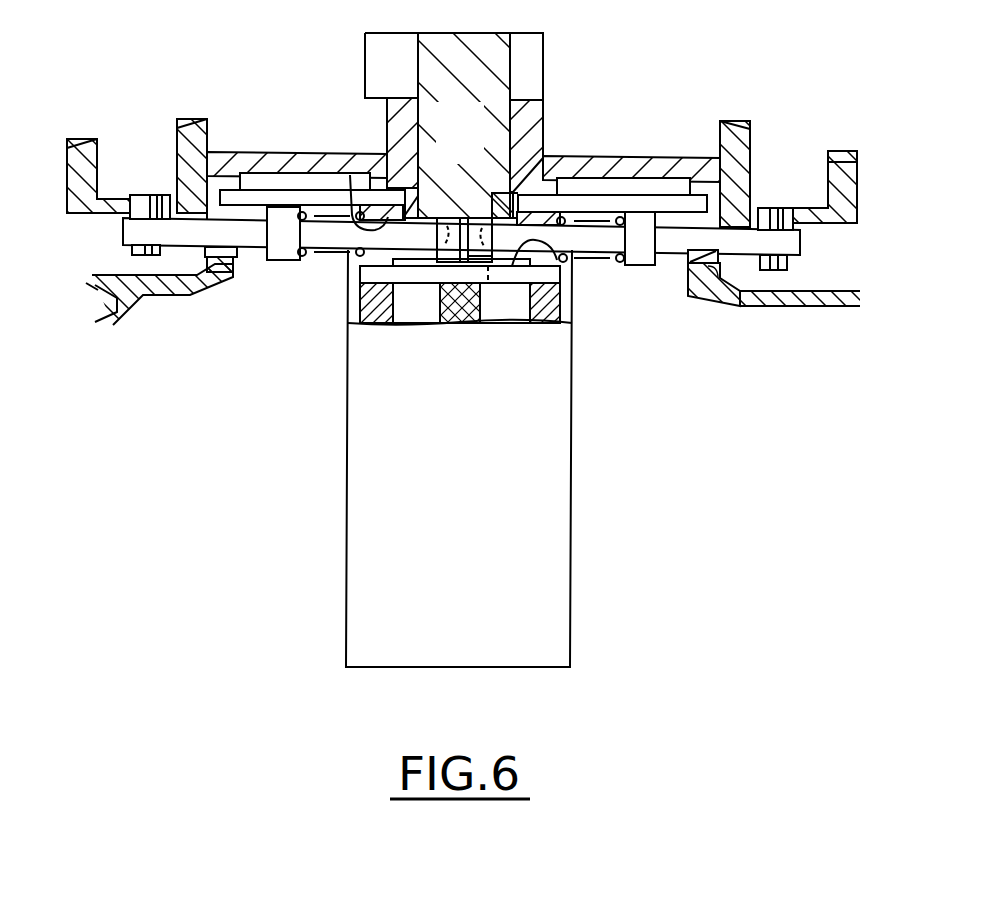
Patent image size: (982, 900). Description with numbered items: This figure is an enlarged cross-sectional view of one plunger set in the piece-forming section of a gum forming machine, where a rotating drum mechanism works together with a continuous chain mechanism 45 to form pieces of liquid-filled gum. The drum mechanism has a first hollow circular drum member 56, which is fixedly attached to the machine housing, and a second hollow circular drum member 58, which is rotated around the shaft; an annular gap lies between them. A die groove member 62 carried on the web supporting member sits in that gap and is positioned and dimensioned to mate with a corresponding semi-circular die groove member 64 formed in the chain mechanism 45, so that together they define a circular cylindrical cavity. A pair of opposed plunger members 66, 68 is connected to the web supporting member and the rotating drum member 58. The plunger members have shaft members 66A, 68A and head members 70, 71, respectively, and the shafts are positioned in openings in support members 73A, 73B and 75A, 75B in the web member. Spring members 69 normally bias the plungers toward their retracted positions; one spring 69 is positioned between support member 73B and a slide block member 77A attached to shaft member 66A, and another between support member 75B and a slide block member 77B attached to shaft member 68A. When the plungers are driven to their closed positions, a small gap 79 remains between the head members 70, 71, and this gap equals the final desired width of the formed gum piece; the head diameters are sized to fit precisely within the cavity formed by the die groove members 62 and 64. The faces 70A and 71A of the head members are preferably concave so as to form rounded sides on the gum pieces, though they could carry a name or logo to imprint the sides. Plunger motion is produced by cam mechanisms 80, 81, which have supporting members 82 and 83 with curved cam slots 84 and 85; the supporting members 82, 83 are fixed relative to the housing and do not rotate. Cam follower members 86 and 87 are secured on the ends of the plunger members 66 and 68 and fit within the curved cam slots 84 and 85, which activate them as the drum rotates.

The continuous chain mechanism 45 is at (348, 476).
The first hollow circular drum member 56 is at (177, 287).
The second hollow circular drum member 58 is at (773, 297).
The die groove member 62 is at (466, 210).
The semi-circular die groove member 64 is at (428, 268).
The plunger member 66 is at (257, 262).
The shaft member 66A is at (248, 222).
The plunger member 68 is at (675, 268).
The shaft member 68A is at (668, 235).
The spring member 69 is at (302, 257).
The head member 70 is at (441, 218).
The face 70A is at (443, 252).
The head member 71 is at (500, 200).
The face 71A is at (493, 273).
The support member 73A is at (217, 260).
The support member 73B is at (350, 175).
The support member 75A is at (714, 290).
The support member 75B is at (512, 268).
The slide block member 77A is at (286, 225).
The slide block member 77B is at (650, 268).
The gap 79 is at (473, 257).
The cam mechanism 80 is at (110, 175).
The cam mechanism 81 is at (809, 189).
The supporting member 82 is at (70, 165).
The supporting member 83 is at (840, 168).
The curved cam slot 84 is at (143, 195).
The curved cam slot 85 is at (778, 208).
The cam follower member 86 is at (159, 195).
The cam follower member 87 is at (772, 224).